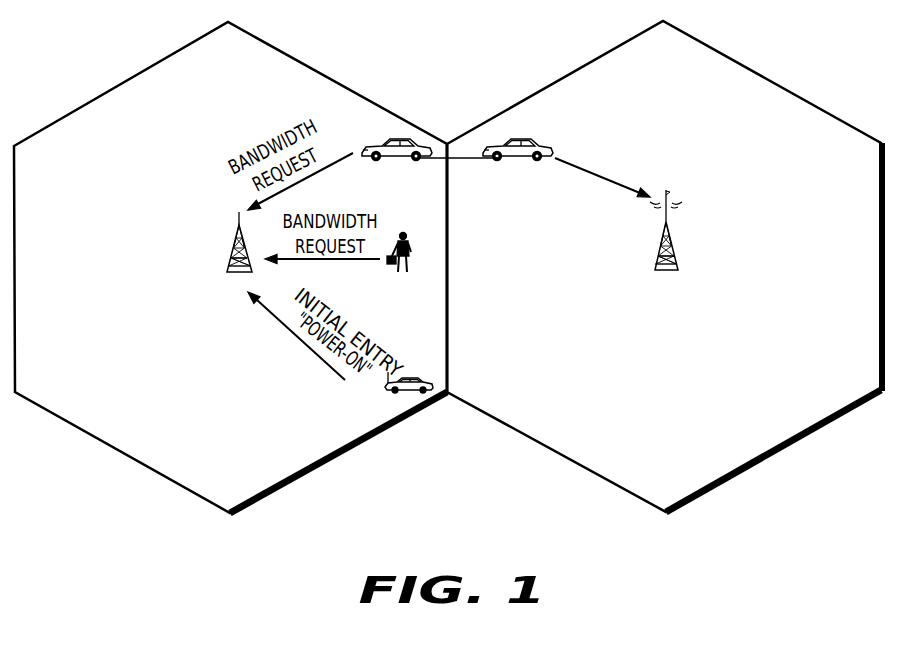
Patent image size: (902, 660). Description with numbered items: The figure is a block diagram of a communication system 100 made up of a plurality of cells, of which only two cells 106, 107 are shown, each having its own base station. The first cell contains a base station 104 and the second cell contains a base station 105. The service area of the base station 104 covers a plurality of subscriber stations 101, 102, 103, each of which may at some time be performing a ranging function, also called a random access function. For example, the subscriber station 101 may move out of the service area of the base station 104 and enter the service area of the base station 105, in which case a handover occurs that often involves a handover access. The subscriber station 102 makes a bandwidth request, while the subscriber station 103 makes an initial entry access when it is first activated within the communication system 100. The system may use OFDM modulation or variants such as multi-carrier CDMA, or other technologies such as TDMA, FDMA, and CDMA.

The communication system 100 is at (465, 643).
The subscriber station 101 is at (396, 158).
The subscriber station 102 is at (409, 252).
The subscriber station 103 is at (422, 378).
The base station 104 is at (232, 250).
The base station 105 is at (676, 258).
The cell 106 is at (343, 457).
The cell 107 is at (776, 452).